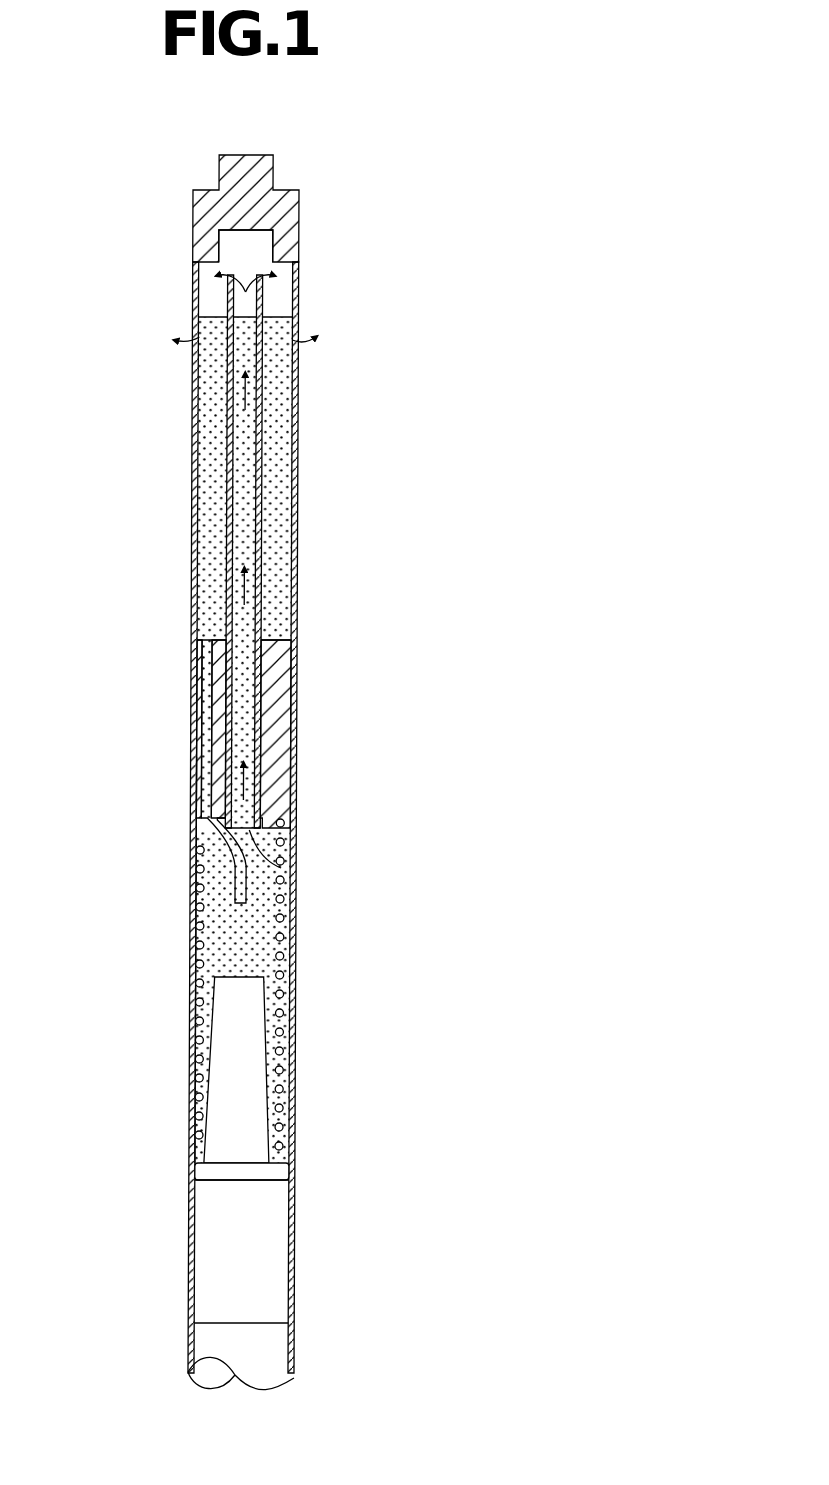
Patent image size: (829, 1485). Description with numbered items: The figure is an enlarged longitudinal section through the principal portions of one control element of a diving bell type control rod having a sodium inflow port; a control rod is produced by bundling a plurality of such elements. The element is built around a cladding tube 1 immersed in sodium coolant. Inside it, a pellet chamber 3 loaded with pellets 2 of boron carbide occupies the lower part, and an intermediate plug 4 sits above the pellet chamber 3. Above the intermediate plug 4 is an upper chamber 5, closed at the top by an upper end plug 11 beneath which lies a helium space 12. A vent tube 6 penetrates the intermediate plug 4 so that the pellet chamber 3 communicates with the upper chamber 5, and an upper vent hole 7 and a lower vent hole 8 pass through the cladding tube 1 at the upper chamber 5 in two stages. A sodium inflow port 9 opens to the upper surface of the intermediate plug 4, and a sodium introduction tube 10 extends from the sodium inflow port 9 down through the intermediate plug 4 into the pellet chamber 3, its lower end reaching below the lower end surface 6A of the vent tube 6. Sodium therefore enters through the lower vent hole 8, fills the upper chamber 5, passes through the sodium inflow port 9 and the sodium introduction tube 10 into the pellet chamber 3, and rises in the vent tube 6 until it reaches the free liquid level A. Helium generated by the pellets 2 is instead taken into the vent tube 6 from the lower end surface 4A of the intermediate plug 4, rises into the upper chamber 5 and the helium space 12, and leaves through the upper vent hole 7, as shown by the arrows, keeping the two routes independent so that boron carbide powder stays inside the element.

The cladding tube 1 is at (289, 842).
The pellets 2 is at (277, 1208).
The pellet chamber 3 is at (285, 920).
The intermediate plug 4 is at (278, 723).
The lower end surface of the intermediate plug 4A is at (287, 856).
The upper chamber 5 is at (280, 552).
The vent tube 6 is at (262, 480).
The lower end surface of the vent tube 6A is at (258, 940).
The upper vent hole 7 is at (295, 340).
The lower vent hole 8 is at (293, 638).
The sodium inflow port 9 is at (210, 636).
The sodium introduction tube 10 is at (238, 888).
The upper end plug 11 is at (300, 188).
The helium space 12 is at (257, 248).
The level A is at (282, 316).